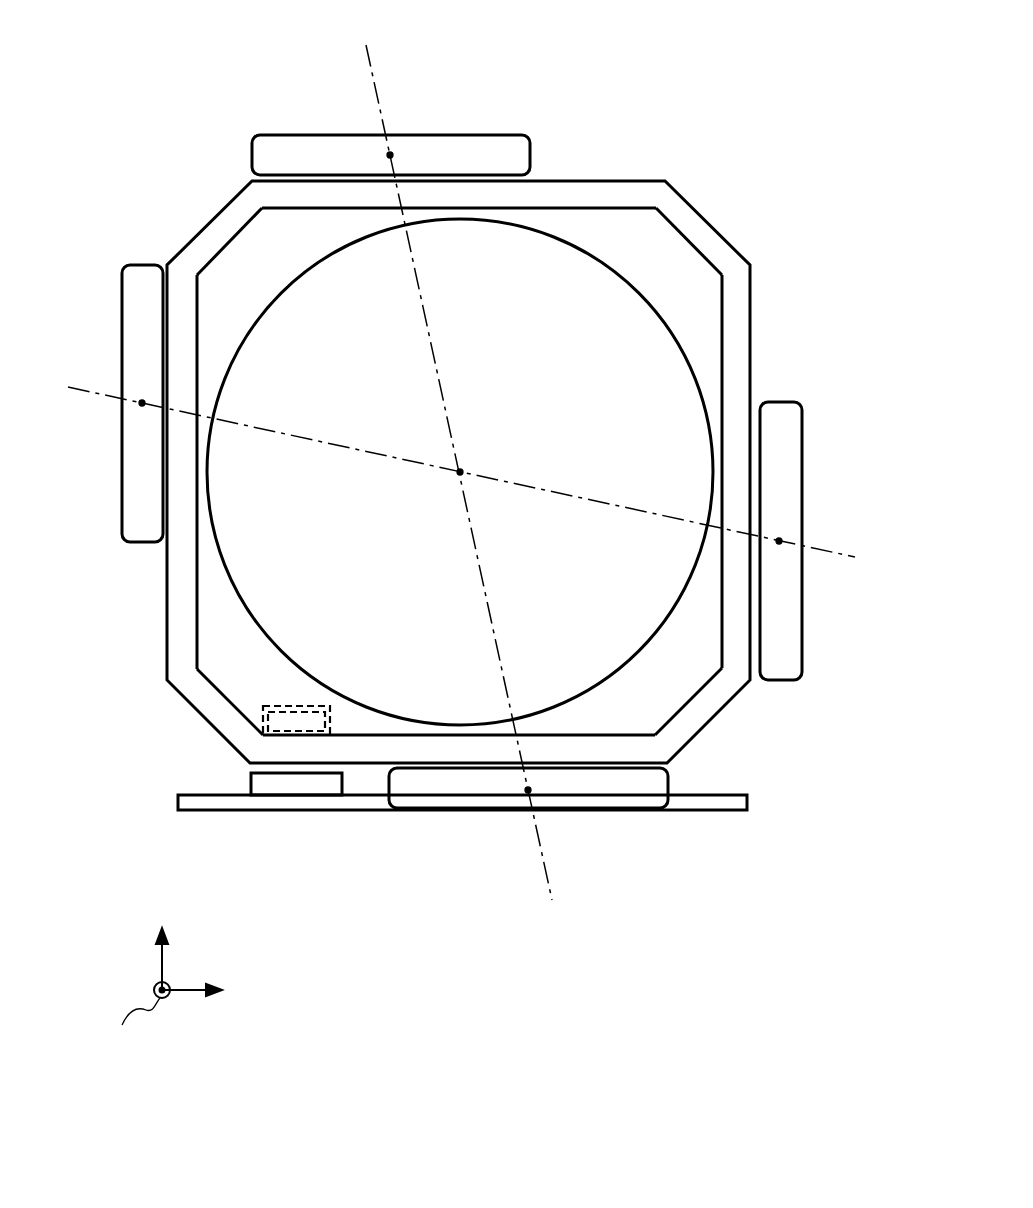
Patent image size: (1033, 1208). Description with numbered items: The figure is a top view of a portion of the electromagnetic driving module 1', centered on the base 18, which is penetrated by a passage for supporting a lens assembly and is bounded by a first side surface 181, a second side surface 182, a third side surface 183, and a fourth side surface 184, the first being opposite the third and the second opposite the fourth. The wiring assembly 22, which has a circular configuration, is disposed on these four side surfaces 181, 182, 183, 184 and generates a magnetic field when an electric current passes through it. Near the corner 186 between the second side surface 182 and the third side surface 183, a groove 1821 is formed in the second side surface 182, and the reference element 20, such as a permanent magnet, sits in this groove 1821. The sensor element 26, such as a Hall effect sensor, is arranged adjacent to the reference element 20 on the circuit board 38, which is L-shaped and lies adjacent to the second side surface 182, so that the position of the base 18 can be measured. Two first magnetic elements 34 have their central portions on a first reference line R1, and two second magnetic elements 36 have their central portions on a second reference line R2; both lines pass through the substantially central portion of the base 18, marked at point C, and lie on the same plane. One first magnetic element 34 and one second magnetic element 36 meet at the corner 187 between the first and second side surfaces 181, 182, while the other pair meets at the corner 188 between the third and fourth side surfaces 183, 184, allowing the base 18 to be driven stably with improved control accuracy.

The electromagnetic driving module 1' is at (461, 542).
The base 18 is at (676, 268).
The first side surface 181 is at (725, 365).
The second side surface 182 is at (460, 738).
The third side surface 183 is at (196, 590).
The fourth side surface 184 is at (460, 205).
The corner 186 is at (255, 728).
The corner 187 is at (690, 703).
The corner 188 is at (228, 240).
The groove 1821 is at (270, 706).
The reference element 20 is at (265, 718).
The wiring assembly 22 is at (663, 193).
The sensor element 26 is at (297, 780).
The first magnetic element 34 is at (142, 457).
The second magnetic element 36 is at (297, 158).
The circuit board 38 is at (697, 808).
The center of lens C is at (455, 472).
The first reference line R1 is at (482, 482).
The second reference line R2 is at (469, 494).